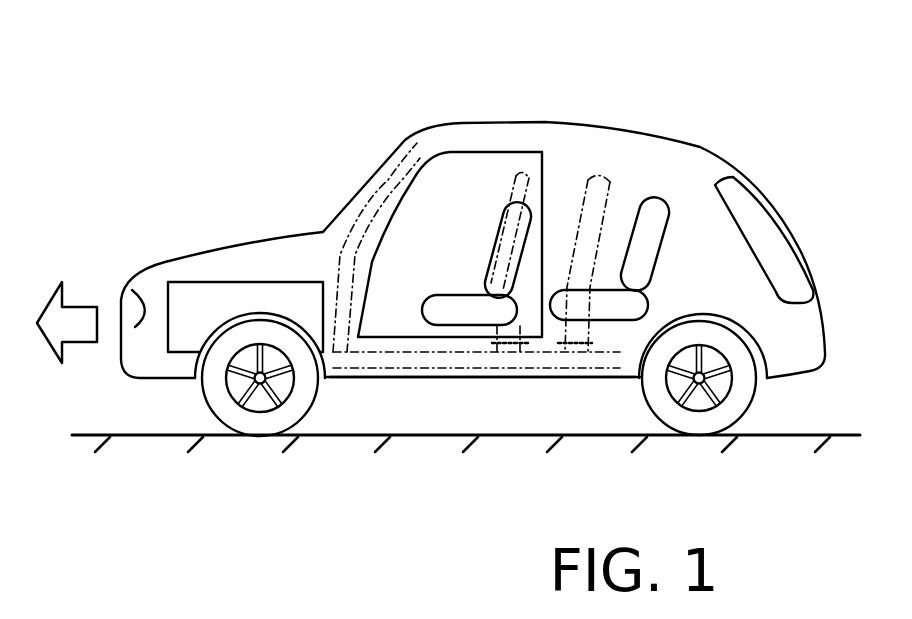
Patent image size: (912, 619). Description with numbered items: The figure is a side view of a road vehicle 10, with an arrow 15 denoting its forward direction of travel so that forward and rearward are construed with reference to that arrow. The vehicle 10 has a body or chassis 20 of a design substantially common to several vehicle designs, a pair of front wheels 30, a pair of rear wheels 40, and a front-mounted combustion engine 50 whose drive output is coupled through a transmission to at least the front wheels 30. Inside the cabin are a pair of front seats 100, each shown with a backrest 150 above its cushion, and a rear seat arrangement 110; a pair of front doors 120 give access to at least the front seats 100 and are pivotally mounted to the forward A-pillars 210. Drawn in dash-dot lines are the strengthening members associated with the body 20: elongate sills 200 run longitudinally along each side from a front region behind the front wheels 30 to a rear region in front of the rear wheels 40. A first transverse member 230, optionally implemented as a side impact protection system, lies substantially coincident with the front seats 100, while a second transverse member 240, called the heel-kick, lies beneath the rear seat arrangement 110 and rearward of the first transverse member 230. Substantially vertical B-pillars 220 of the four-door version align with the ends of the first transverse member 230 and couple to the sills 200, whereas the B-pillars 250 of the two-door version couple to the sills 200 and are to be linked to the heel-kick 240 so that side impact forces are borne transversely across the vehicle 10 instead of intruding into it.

The road vehicle 10 is at (308, 85).
The arrow 15 is at (80, 318).
The body or chassis 20 is at (412, 388).
The front wheels 30 is at (226, 400).
The rear wheels 40 is at (737, 390).
The front-mounted combustion engine 50 is at (227, 295).
The front seats 100 is at (452, 313).
The rear seat arrangement 110 is at (620, 303).
The front doors 120 is at (443, 150).
The front seat backrest 150 is at (495, 256).
The sills 200 is at (355, 363).
The A-pillars 210 is at (354, 212).
The B-pillars 220 is at (522, 180).
The first transverse member 230 is at (523, 345).
The second transverse member 240 is at (607, 342).
The B-pillars 250 is at (603, 190).